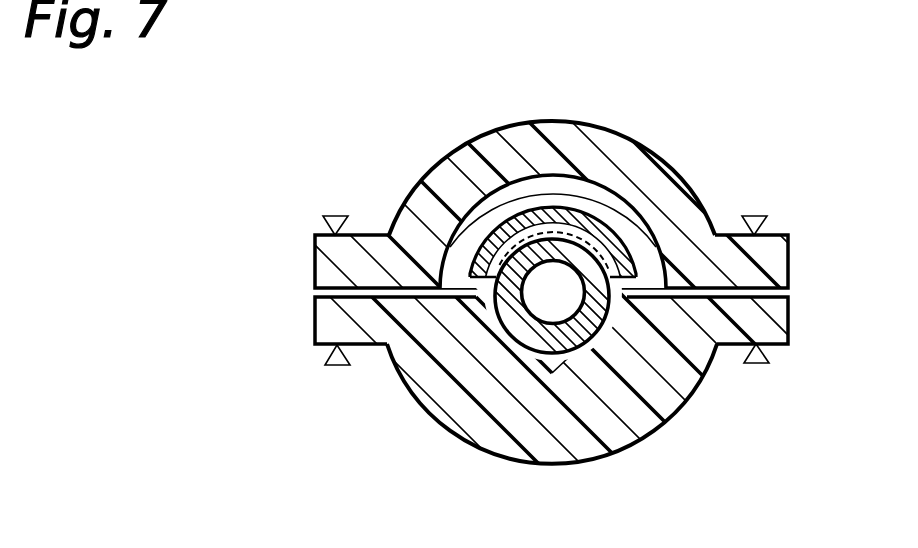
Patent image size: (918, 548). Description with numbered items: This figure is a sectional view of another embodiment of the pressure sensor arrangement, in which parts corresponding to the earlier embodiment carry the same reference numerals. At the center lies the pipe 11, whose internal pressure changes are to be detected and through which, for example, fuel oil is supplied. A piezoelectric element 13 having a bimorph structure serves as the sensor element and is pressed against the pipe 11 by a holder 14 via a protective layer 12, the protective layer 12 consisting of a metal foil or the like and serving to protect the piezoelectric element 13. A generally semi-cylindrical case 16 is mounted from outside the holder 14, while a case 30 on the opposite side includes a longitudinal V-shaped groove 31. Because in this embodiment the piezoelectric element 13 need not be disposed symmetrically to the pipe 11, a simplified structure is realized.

The pipe 11 is at (533, 328).
The protective layer 12 is at (633, 247).
The piezoelectric element 13 is at (513, 233).
The holder 14 is at (607, 203).
The case 16 is at (667, 193).
The case 30 is at (592, 407).
The V-shaped groove 31 is at (682, 387).